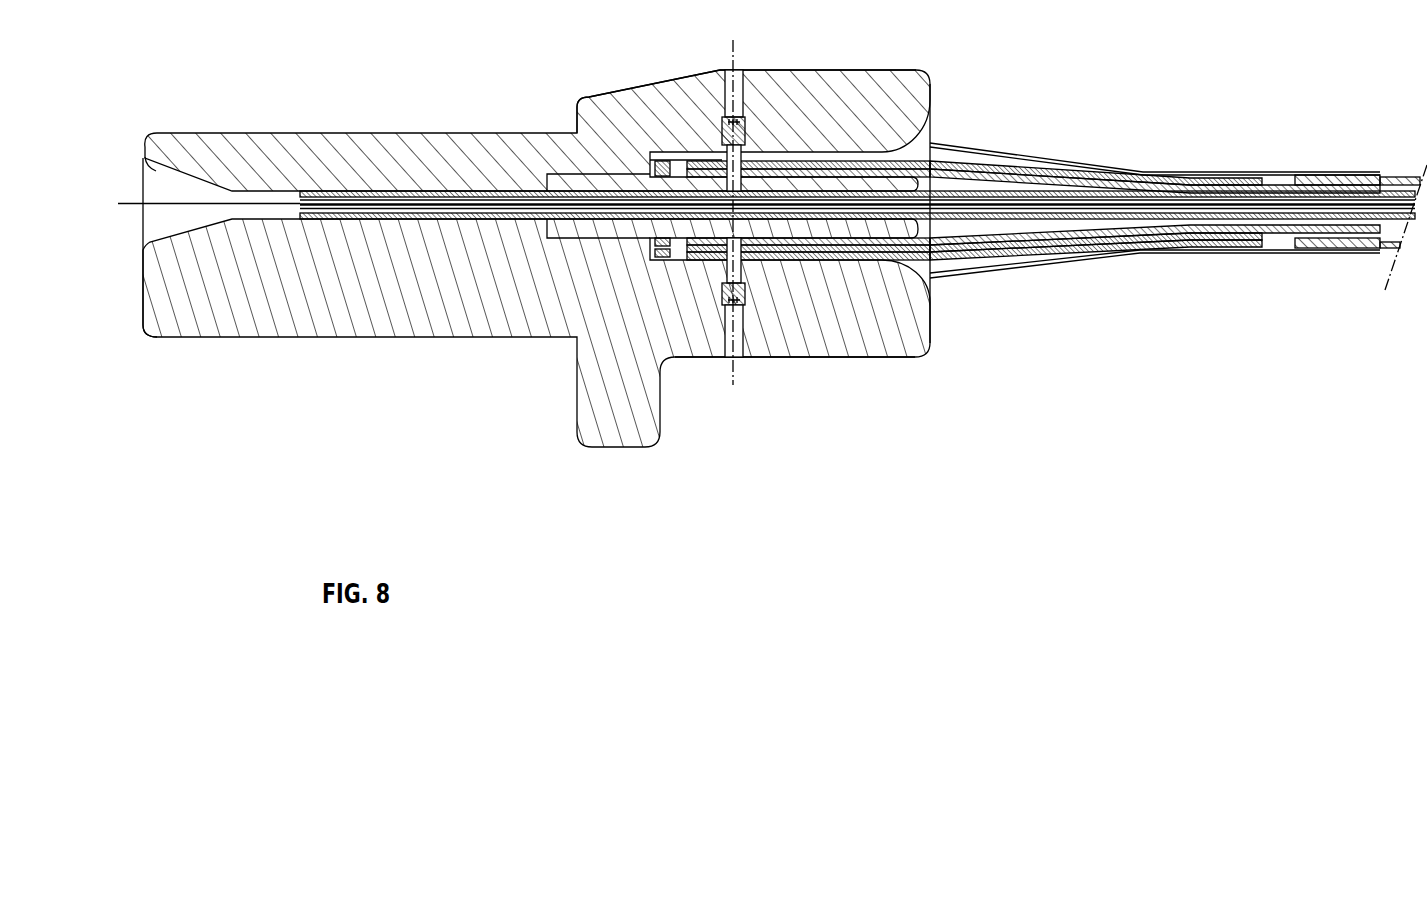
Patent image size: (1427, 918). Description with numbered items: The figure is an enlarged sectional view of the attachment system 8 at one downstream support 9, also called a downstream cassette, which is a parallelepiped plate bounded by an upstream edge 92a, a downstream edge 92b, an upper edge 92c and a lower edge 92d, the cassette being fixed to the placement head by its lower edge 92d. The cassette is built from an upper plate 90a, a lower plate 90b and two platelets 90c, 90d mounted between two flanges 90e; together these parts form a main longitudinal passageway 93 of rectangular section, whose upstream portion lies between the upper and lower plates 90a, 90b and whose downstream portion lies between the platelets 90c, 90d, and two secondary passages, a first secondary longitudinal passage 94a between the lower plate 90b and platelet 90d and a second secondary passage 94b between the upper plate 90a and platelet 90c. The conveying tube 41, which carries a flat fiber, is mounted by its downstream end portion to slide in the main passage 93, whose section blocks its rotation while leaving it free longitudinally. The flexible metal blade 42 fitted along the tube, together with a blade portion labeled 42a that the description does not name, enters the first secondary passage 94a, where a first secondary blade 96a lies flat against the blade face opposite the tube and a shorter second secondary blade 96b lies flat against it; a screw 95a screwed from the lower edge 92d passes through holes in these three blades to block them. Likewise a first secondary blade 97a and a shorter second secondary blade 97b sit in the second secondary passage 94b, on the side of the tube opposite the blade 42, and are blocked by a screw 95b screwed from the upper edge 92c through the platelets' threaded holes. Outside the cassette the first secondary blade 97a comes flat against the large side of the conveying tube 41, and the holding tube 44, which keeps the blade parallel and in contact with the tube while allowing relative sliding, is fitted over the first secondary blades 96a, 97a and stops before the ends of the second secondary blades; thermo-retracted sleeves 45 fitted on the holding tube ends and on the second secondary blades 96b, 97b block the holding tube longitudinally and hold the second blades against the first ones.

The upstream attachment system 8 is at (389, 126).
The downstream support 9 is at (449, 133).
The conveying tube 41 is at (1382, 178).
The flexible metal blade 42 is at (1340, 236).
The sheath tube end portion 42a is at (777, 262).
The holding tube 44 is at (1324, 176).
The sleeves 45 is at (1050, 162).
The upper plate 90a is at (301, 141).
The lower plate 90b is at (372, 331).
The platelet 90c is at (608, 188).
The platelet 90d is at (582, 236).
The flanges 90e is at (172, 186).
The upstream edge 92a is at (932, 90).
The downstream edge 92b is at (143, 303).
The upper edge 92c is at (757, 70).
The lower edge 92d is at (480, 336).
The main longitudinal passageway 93 is at (527, 188).
The first secondary longitudinal passage 94a is at (850, 266).
The second secondary passage 94b is at (840, 150).
The screw 95a is at (731, 301).
The screw 95b is at (722, 116).
The first secondary blade 96a is at (1283, 240).
The second secondary blade 96b is at (1218, 245).
The first secondary blade 97a is at (1272, 187).
The second secondary blade 97b is at (1168, 182).